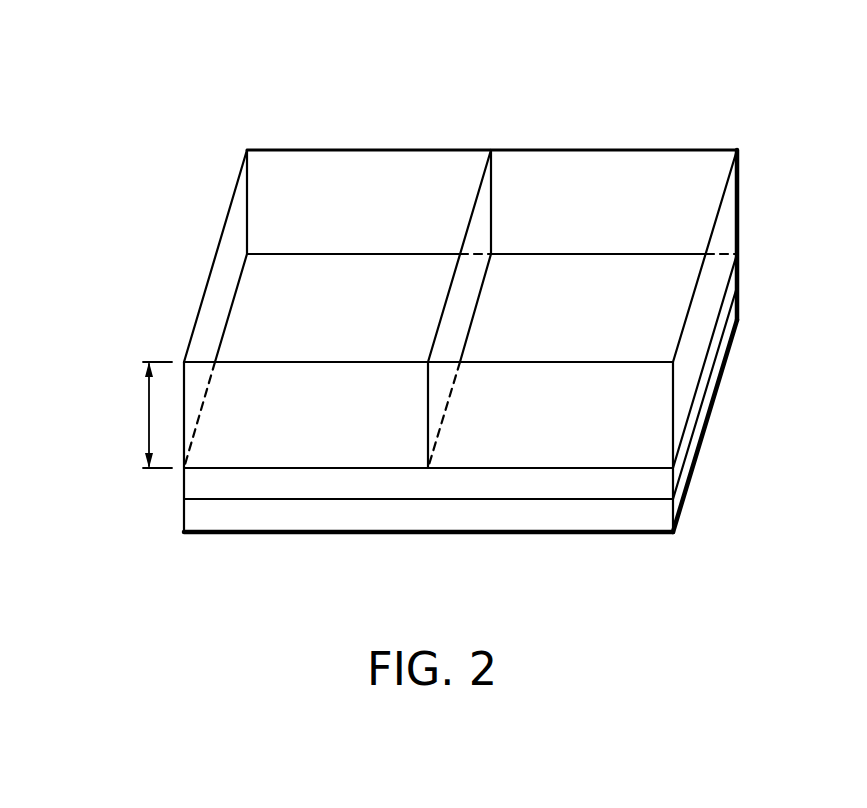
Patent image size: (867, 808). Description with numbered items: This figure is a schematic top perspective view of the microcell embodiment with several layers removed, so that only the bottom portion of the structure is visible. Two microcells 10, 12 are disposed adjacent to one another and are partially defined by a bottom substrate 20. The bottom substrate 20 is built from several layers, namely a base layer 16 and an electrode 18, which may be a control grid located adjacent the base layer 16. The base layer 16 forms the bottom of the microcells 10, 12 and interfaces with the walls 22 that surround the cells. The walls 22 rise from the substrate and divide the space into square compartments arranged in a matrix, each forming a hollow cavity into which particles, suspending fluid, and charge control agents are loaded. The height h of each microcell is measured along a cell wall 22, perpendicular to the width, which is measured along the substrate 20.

The microcell 10 is at (403, 292).
The microcell 12 is at (634, 98).
The base layer 16 is at (184, 484).
The electrode 18 is at (125, 472).
The bottom substrate 20 is at (403, 402).
The walls 22 is at (455, 251).